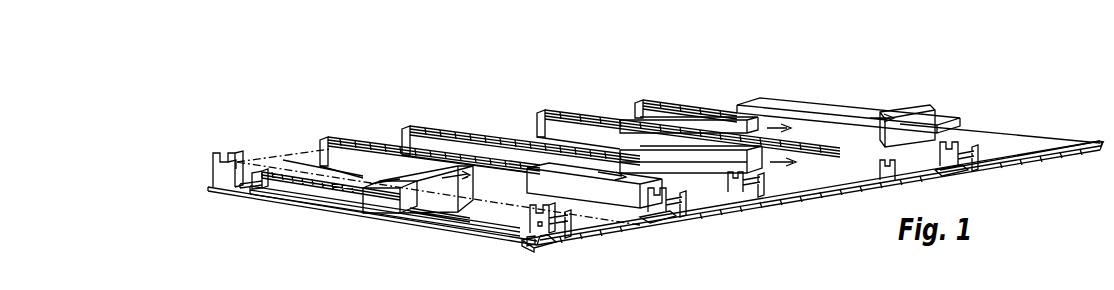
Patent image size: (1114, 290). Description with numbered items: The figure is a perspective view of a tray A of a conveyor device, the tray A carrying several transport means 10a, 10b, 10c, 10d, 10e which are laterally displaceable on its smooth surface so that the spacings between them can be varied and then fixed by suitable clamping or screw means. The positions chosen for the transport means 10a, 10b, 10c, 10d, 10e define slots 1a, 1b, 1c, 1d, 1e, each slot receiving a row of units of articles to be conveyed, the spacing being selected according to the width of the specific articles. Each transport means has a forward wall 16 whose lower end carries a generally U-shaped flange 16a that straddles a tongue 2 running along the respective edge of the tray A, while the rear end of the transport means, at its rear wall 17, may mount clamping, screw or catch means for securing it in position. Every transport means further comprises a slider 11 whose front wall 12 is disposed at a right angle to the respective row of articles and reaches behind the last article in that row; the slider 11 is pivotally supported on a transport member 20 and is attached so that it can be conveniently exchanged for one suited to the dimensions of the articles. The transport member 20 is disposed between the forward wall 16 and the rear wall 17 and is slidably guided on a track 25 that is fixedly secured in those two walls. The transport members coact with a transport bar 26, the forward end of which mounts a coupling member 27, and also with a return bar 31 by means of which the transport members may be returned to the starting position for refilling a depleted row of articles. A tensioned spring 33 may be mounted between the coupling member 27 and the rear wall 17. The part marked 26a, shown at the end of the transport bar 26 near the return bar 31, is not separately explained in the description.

The tray A is at (1040, 140).
The slot 1a is at (757, 100).
The slot 1b is at (620, 115).
The slot 1c is at (515, 130).
The slot 1d is at (380, 134).
The slot 1e is at (303, 160).
The transport means 10a is at (655, 110).
The transport means 10b is at (545, 120).
The transport means 10c is at (404, 128).
The transport means 10d is at (329, 137).
The transport means 10e is at (228, 152).
The slider 11 is at (443, 174).
The front wall 12 is at (920, 121).
The forward wall 16 is at (528, 238).
The U-shaped flange 16a is at (550, 241).
The rear wall 17 is at (212, 186).
The tongue 2 is at (1020, 160).
The transport member 20 is at (388, 206).
The track 25 is at (332, 192).
The transport bar 26 is at (312, 182).
The strip end 26a is at (246, 188).
The coupling member 27 is at (598, 235).
The return bar 31 is at (262, 180).
The tensioned spring 33 is at (243, 170).